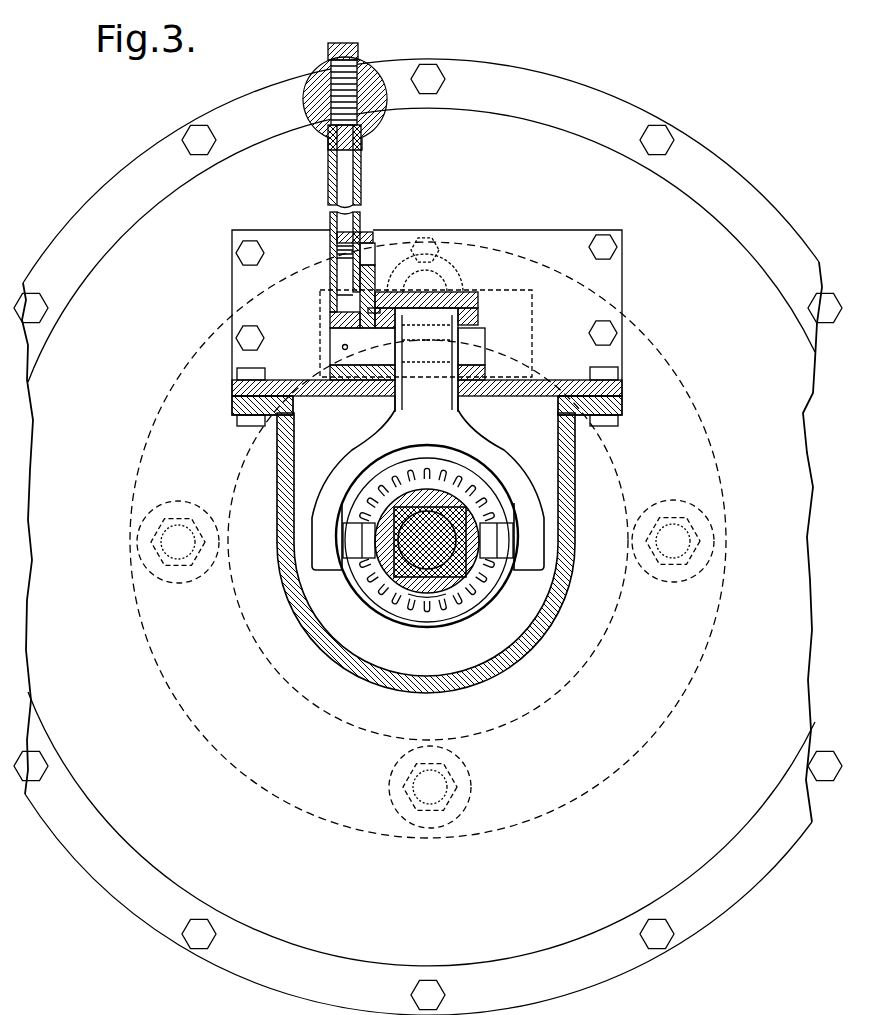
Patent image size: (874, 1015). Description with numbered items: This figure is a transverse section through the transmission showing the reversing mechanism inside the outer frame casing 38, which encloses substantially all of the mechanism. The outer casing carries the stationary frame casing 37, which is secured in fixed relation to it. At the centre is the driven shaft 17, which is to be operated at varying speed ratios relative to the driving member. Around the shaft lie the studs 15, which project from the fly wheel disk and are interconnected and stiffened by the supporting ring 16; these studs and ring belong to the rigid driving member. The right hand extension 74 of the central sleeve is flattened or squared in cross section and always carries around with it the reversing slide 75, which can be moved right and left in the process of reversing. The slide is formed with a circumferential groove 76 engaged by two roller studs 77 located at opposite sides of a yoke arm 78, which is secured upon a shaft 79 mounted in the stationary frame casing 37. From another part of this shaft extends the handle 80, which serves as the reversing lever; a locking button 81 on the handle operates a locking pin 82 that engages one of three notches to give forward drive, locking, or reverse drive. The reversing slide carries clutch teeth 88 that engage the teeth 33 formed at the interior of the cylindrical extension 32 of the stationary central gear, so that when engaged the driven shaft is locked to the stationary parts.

The studs 15 is at (180, 553).
The supporting ring 16 is at (308, 783).
The driven shaft 17 is at (430, 557).
The cylindrical extension 32 is at (490, 588).
The teeth 33 is at (483, 600).
The stationary frame casing 37 is at (427, 328).
The outer frame casing 38 is at (577, 526).
The right hand extension of the central sleeve 74 is at (405, 565).
The reversing slide 75 is at (382, 553).
The circumferential groove 76 is at (422, 597).
The roller studs 77 is at (365, 541).
The yoke arm 78 is at (428, 483).
The shaft 79 is at (468, 337).
The handle 80 is at (362, 177).
The locking member or button 81 is at (358, 47).
The locking pin 82 is at (378, 230).
The clutch teeth 88 is at (455, 602).